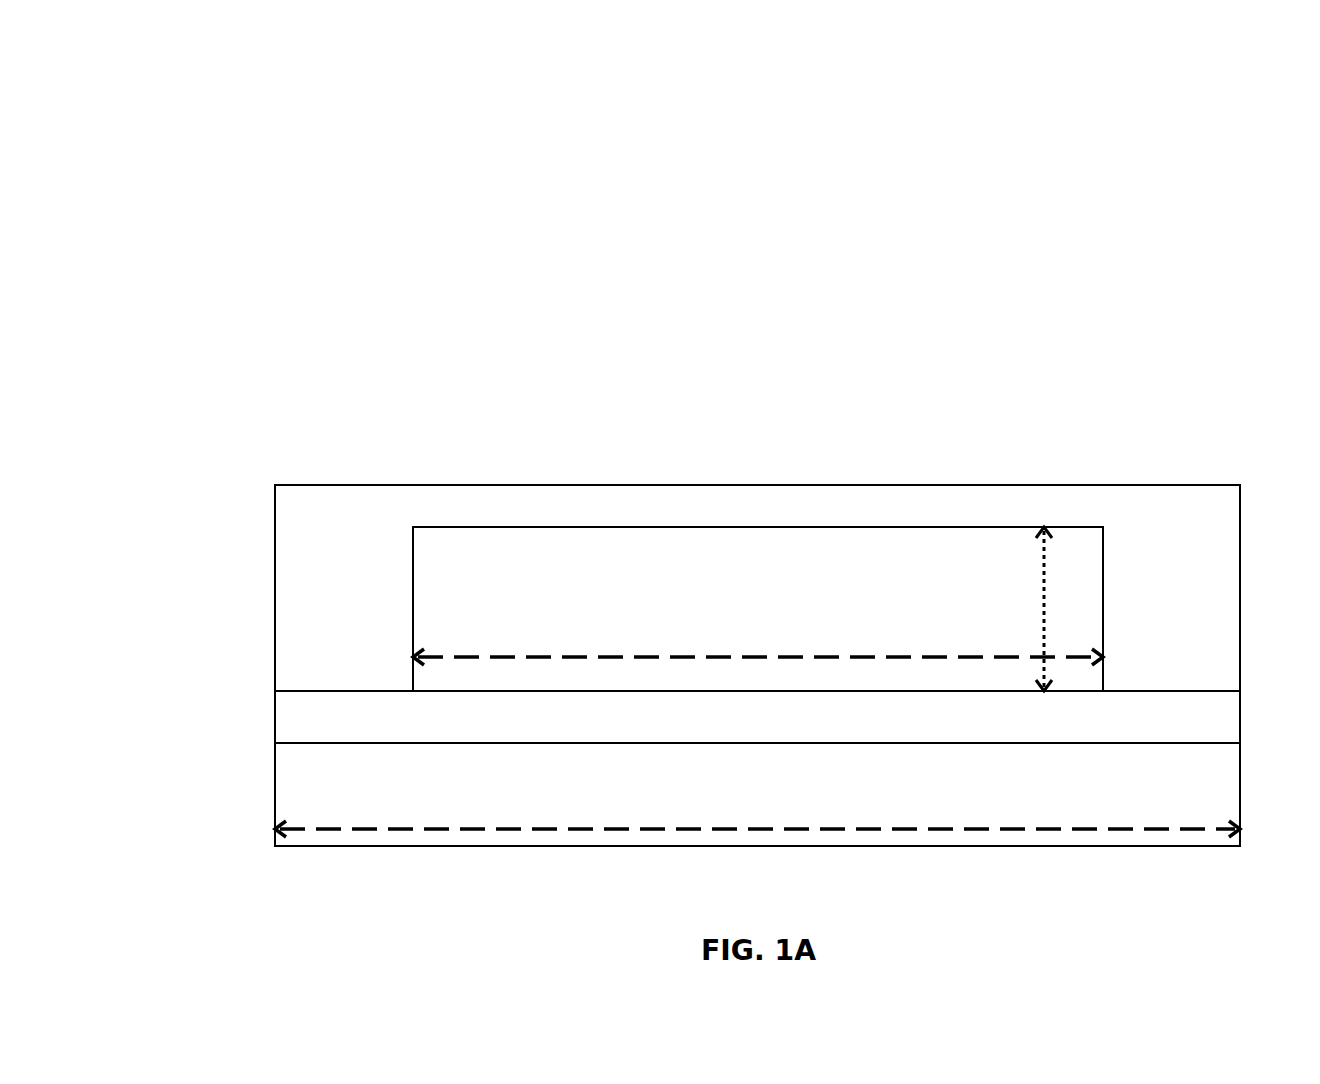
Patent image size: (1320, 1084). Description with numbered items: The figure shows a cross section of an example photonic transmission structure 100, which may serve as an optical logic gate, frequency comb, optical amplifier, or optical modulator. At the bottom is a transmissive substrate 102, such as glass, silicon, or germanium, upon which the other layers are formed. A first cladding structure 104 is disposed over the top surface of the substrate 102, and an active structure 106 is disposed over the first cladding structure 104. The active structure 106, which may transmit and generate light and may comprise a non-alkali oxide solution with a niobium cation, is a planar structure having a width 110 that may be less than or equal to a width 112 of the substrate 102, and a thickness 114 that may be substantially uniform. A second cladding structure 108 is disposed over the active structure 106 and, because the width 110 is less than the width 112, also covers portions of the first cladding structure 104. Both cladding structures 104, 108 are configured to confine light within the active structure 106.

The photonic transmission structure 100 is at (277, 70).
The substrate 102 is at (829, 806).
The first cladding structure 104 is at (896, 728).
The active structure 106 is at (858, 618).
The second cladding structure 108 is at (913, 516).
The width 110 is at (413, 657).
The width 112 is at (275, 830).
The thickness 114 is at (1044, 527).